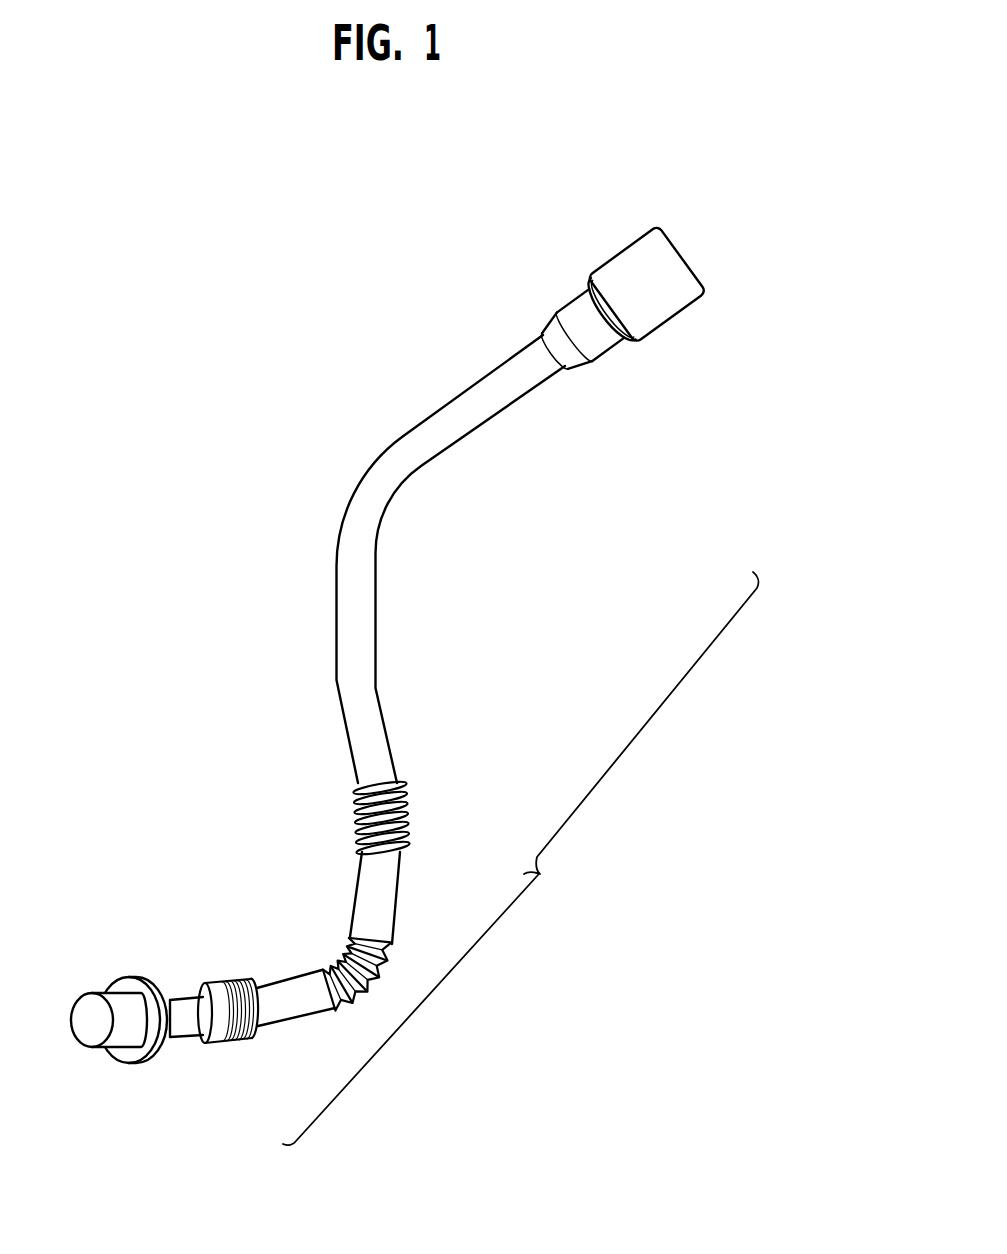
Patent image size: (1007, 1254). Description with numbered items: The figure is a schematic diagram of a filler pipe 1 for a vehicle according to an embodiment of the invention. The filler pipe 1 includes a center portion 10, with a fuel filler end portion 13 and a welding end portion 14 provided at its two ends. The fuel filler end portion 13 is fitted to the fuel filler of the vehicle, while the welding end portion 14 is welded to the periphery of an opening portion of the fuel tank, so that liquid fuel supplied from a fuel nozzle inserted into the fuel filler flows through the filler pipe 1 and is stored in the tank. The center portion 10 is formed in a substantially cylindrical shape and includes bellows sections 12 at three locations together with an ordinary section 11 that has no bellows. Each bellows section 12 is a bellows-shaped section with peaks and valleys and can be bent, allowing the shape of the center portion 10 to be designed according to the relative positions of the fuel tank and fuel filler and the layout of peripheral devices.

The filler pipe 1 is at (618, 193).
The center portion 10 is at (520, 858).
The ordinary section 11 is at (415, 425).
The bellows section 12 is at (410, 821).
The fuel filler end portion 13 is at (697, 255).
The welding end portion 14 is at (130, 976).